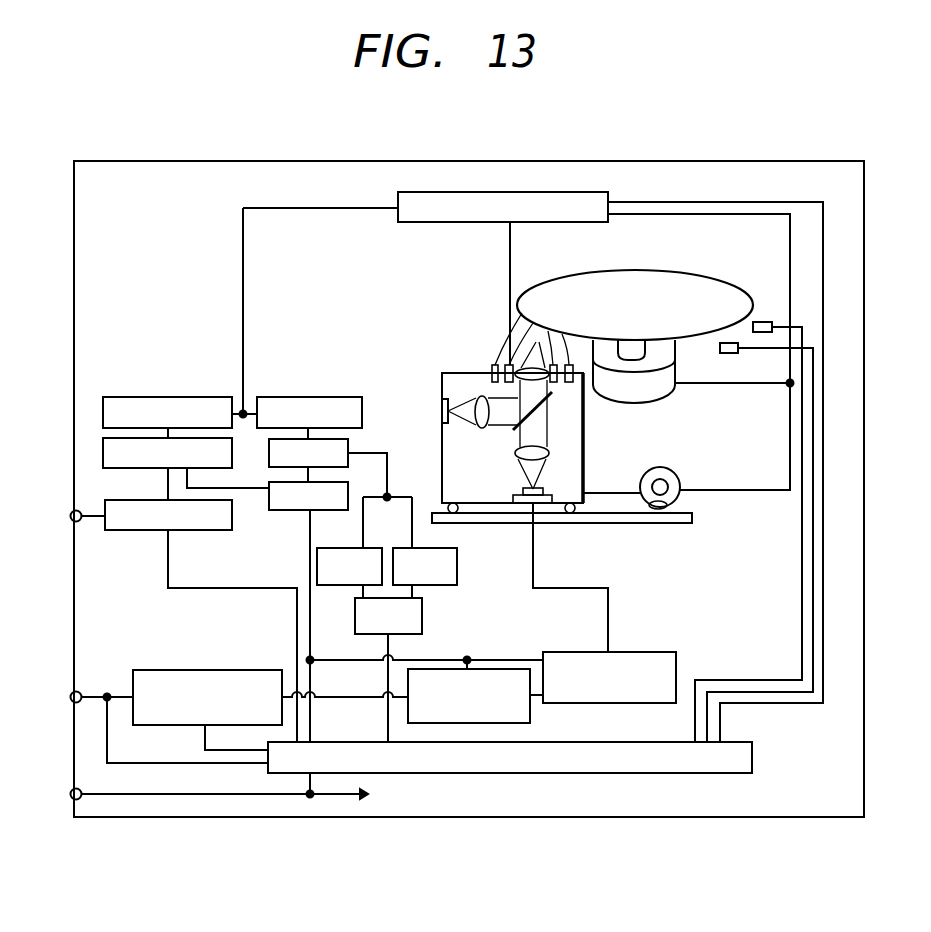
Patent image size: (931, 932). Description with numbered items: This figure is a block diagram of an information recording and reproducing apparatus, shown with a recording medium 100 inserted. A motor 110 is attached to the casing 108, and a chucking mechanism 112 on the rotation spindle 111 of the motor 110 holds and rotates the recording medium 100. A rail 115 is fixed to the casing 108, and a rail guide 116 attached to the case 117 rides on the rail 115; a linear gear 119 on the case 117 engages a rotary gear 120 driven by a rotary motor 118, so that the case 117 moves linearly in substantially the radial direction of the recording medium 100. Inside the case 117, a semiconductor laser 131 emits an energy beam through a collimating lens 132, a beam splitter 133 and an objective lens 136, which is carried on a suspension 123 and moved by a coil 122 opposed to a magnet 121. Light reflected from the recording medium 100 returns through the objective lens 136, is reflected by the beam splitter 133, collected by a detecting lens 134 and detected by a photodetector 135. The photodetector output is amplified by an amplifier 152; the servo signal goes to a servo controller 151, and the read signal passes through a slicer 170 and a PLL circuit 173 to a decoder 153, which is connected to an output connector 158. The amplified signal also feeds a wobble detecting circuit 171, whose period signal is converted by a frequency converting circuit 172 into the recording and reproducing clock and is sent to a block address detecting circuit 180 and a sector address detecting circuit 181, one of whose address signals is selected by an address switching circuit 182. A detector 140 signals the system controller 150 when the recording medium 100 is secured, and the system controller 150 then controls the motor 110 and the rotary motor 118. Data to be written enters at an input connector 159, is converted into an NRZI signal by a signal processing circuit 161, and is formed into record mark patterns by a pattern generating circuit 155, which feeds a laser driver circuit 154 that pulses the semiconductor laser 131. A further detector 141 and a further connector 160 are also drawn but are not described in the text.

The recording medium 100 is at (620, 272).
The casing 108 is at (780, 161).
The motor 110 is at (669, 398).
The rotation spindle 111 is at (676, 365).
The chucking mechanism 112 is at (662, 290).
The rail 115 is at (650, 524).
The rail guide 116 is at (456, 514).
The case 117 is at (586, 432).
The rotary motor 118 is at (681, 481).
The linear gear 119 is at (603, 493).
The rotary gear 120 is at (660, 486).
The magnet 121 is at (490, 366).
The coil 122 is at (508, 365).
The suspension 123 is at (497, 365).
The semiconductor laser 131 is at (522, 490).
The collimating lens 132 is at (515, 453).
The beam splitter 133 is at (512, 430).
The detecting lens 134 is at (475, 428).
The photodetector 135 is at (441, 400).
The objective lens 136 is at (529, 366).
The detector 140 is at (736, 354).
The position sensor 141 is at (761, 322).
The system controller 150 is at (607, 742).
The servo controller 151 is at (430, 222).
The amplifier 152 is at (305, 397).
The decoder 153 is at (150, 530).
The laser driver circuit 154 is at (627, 652).
The pattern generating circuit 155 is at (506, 668).
The output connector 158 is at (71, 513).
The input connector 159 is at (71, 694).
The output terminal 160 is at (71, 791).
The signal processing circuit 161 is at (222, 670).
The slicer 170 is at (178, 397).
The wobble detecting circuit 171 is at (350, 440).
The frequency converting circuit 172 is at (292, 511).
The PLL circuit 173 is at (140, 468).
The block address detecting circuit 180 is at (340, 586).
The sector address detecting circuit 181 is at (458, 570).
The address switching circuit 182 is at (423, 616).